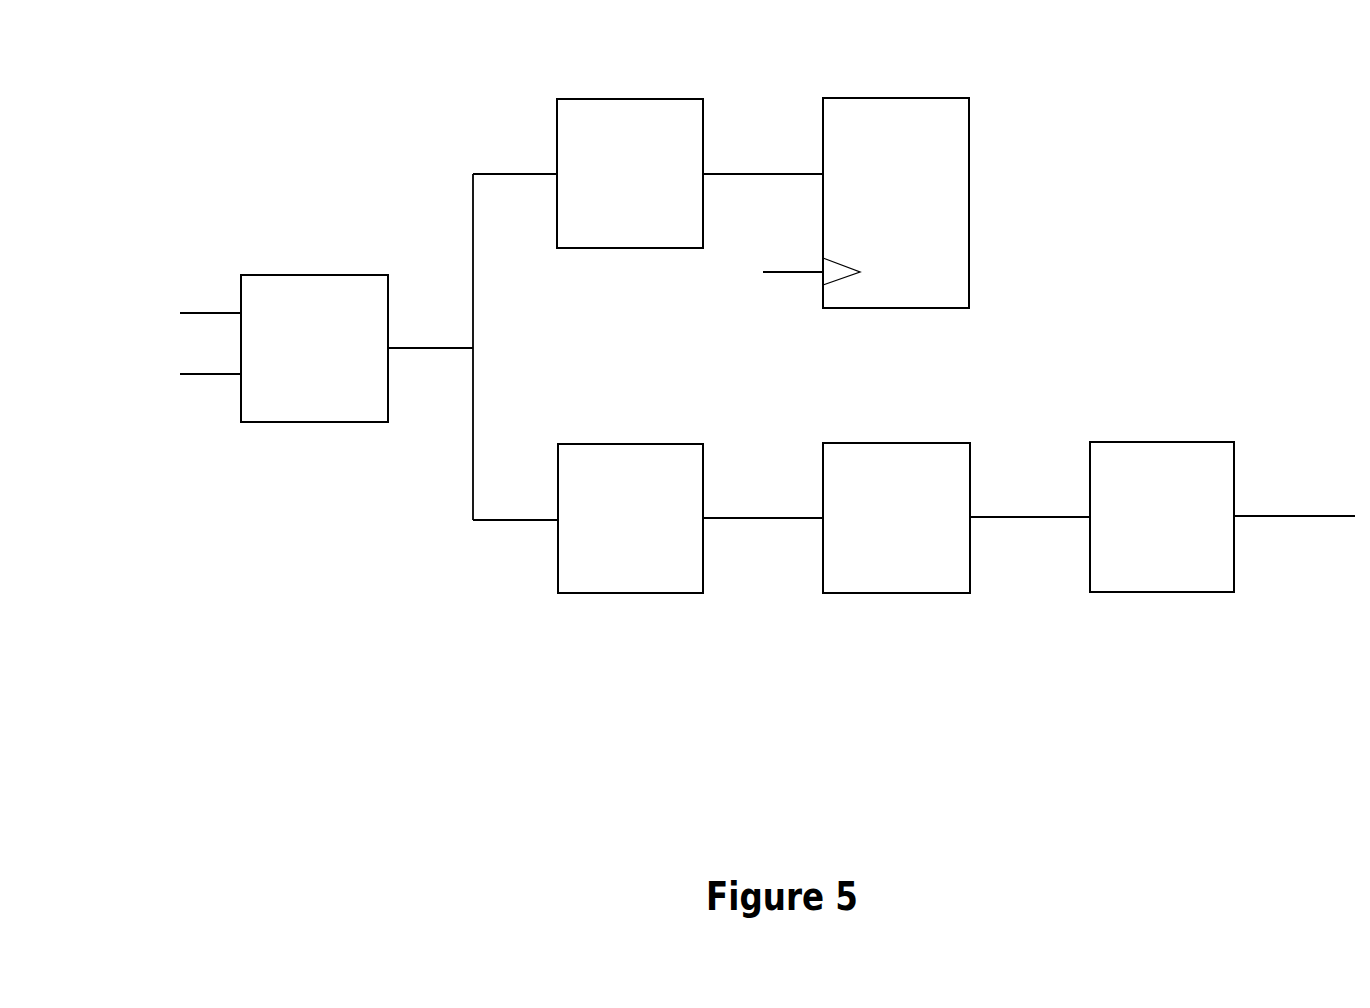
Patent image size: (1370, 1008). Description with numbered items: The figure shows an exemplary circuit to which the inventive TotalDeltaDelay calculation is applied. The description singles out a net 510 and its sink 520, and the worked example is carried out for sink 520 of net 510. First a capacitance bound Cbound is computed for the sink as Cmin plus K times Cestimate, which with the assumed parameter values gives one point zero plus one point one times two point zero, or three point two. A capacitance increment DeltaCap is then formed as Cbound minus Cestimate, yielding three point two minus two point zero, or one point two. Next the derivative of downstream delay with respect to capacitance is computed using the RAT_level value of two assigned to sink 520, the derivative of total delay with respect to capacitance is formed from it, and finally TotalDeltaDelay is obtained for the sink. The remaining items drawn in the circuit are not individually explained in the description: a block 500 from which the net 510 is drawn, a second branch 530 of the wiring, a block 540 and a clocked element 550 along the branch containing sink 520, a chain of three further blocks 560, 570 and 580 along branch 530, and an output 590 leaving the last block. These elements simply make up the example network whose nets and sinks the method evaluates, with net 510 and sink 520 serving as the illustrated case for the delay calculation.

The logic gate / comparator block 500 is at (317, 275).
The net 510 is at (473, 462).
The sink 520 is at (556, 174).
The lower branch signal line 530 is at (558, 522).
The delay block 540 is at (629, 99).
The D flip-flop 550 is at (895, 98).
The first delay stage 560 is at (633, 593).
The second delay stage 570 is at (897, 593).
The third delay stage 580 is at (1162, 593).
The output signal 590 is at (1355, 516).